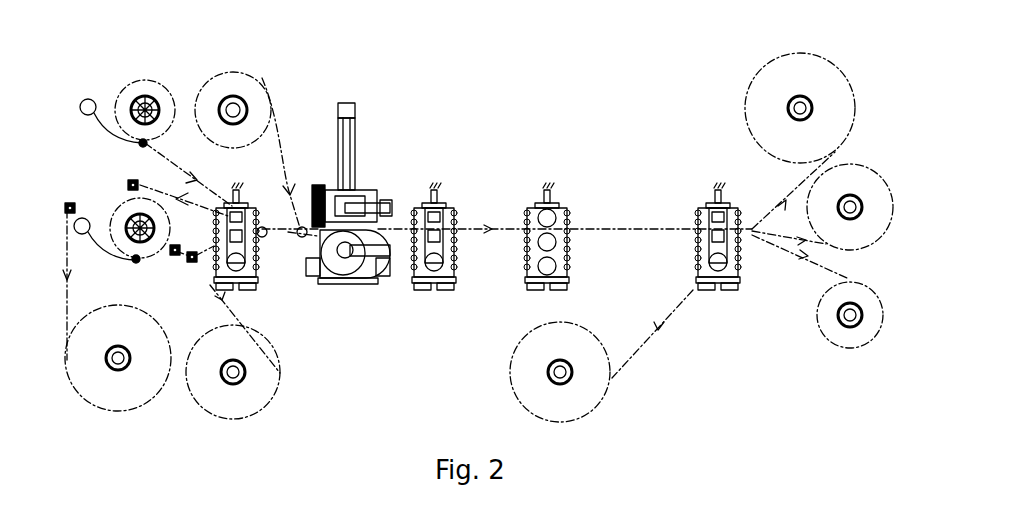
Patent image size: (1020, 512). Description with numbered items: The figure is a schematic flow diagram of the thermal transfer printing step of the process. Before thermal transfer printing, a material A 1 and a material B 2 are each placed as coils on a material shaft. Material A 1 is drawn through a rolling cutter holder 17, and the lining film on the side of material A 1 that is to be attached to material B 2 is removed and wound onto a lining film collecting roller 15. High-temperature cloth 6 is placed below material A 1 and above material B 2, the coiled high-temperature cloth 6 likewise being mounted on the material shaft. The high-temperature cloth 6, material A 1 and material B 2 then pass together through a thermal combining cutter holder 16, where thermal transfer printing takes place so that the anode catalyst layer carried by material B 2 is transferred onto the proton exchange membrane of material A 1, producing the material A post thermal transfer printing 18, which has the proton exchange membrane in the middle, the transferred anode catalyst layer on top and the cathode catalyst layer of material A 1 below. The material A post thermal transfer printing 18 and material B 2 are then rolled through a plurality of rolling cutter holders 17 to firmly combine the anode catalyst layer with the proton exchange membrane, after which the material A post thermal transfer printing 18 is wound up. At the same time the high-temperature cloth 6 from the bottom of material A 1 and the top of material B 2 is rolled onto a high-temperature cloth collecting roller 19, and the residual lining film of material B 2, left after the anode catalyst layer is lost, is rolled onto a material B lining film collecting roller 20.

The material A 1 is at (118, 207).
The material B 2 is at (127, 87).
The high-temperature cloth 6 is at (237, 72).
The lining film collecting roller 15 is at (108, 358).
The thermal combining cutter holder 16 is at (355, 187).
The rolling cutter holder 17 is at (437, 200).
The material A post thermal transfer printing 18 is at (882, 322).
The high-temperature cloth collecting roller 19 is at (790, 105).
The material B lining film collecting roller 20 is at (860, 208).